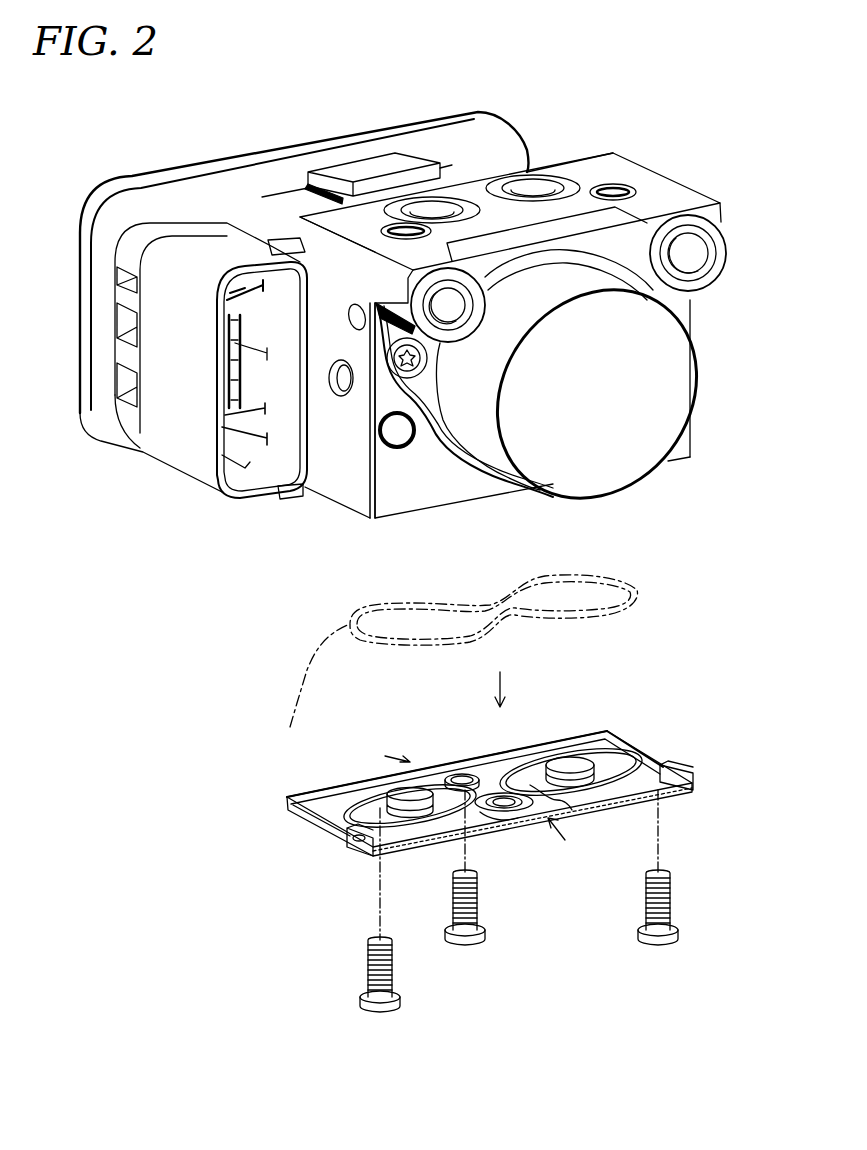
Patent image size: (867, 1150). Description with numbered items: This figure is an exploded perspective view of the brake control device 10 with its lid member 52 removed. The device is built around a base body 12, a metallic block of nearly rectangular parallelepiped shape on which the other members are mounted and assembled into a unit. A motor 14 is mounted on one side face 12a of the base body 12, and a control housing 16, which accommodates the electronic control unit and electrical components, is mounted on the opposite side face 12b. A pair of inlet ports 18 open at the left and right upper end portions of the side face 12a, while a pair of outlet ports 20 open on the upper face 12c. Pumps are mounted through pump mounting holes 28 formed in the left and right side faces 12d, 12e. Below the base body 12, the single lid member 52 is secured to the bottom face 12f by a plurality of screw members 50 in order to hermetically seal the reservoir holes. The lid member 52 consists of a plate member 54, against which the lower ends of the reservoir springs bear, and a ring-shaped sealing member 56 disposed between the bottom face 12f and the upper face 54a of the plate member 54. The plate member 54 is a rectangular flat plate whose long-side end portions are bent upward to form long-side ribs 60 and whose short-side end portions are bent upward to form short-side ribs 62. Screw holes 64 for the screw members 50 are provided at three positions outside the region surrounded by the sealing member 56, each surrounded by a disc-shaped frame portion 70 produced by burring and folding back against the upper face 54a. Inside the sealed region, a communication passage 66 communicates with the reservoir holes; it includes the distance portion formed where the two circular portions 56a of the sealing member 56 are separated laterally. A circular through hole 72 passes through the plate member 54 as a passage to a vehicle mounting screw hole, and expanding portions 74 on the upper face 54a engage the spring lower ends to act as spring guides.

The brake control device 10 is at (434, 314).
The base body 12 is at (472, 325).
The one side face 12a is at (440, 482).
The other side face 12b is at (510, 178).
The upper face 12c is at (353, 222).
The left side face 12d is at (322, 323).
The right side face 12e is at (695, 332).
The bottom face 12f is at (348, 512).
The motor 14 is at (708, 384).
The control housing 16 is at (193, 166).
The inlet port 18 is at (690, 254).
The outlet port 20 is at (523, 192).
The pump mounting hole 28 is at (322, 377).
The screw member 50 is at (383, 1010).
The lid member 52 is at (476, 739).
The plate member 54 is at (500, 777).
The upper face 54a is at (603, 742).
The sealing member 56 is at (327, 790).
The circular portion 56a is at (503, 768).
The long-side rib 60 is at (538, 752).
The short-side rib 62 is at (315, 823).
The screw hole 64 is at (437, 762).
The communication passage 66 is at (510, 825).
The frame portion 70 is at (462, 770).
The through hole 72 is at (557, 802).
The expanding portion 74 is at (408, 790).